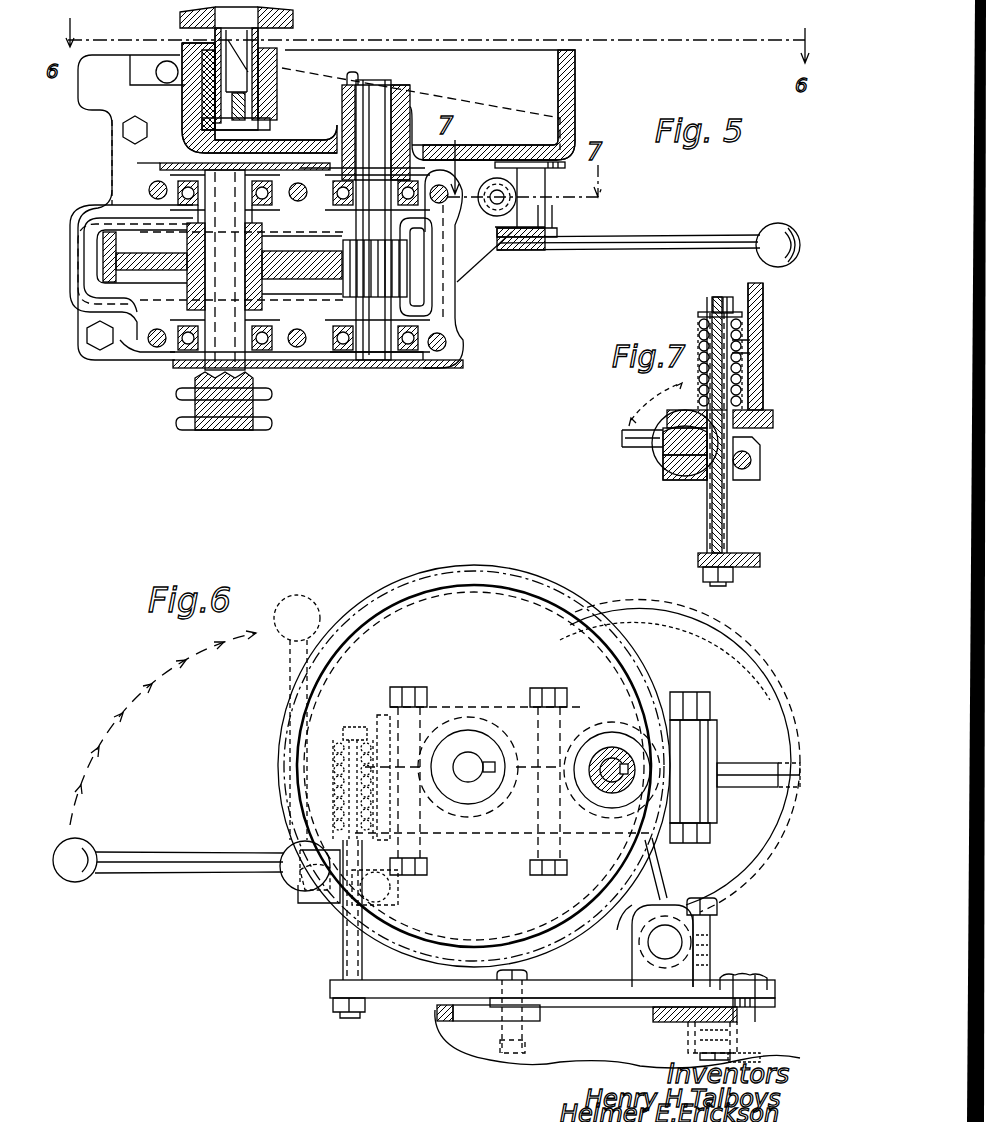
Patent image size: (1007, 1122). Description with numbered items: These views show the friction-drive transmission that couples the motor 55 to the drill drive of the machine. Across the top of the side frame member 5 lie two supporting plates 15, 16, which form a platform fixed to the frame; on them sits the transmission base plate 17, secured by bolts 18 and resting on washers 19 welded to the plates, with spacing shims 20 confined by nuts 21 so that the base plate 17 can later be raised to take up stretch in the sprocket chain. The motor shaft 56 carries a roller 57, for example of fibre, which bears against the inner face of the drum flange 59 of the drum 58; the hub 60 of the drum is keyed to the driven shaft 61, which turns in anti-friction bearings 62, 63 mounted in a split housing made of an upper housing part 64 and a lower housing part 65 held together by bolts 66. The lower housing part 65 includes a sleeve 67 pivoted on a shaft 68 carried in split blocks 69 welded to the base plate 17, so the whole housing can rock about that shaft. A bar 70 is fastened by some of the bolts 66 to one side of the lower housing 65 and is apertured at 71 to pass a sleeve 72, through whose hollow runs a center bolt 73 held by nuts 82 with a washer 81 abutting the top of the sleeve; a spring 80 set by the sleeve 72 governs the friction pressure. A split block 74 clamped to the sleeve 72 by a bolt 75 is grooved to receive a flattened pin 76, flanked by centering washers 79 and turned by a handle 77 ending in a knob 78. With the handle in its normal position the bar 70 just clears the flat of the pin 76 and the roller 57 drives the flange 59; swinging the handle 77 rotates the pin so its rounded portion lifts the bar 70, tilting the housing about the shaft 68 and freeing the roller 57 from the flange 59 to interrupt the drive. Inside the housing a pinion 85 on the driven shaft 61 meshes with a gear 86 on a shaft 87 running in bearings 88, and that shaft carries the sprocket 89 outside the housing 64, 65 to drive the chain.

In FIG. 6, the side frame member 5 is at (470, 1050).
In FIG. 6, the supporting plate 15 is at (655, 1014).
In FIG. 6, the supporting plate 16 is at (460, 1022).
In FIG. 5, the transmission base plate 17 is at (463, 263).
In FIG. 6, the transmission base plate 17 is at (408, 990).
In FIG. 5, the bolt 18 is at (120, 130).
In FIG. 6, the bolt 18 is at (530, 990).
In FIG. 6, the washer 19 is at (540, 1000).
In FIG. 6, the spacing shim 20 is at (695, 1030).
In FIG. 6, the nut 21 is at (700, 1056).
In FIG. 5, the motor 55 is at (296, 22).
In FIG. 5, the motor shaft 56 is at (236, 68).
In FIG. 6, the motor shaft 56 is at (600, 745).
In FIG. 5, the roller 57 is at (280, 98).
In FIG. 6, the roller 57 is at (598, 795).
In FIG. 5, the drum 58 is at (470, 150).
In FIG. 6, the drum 58 is at (442, 610).
In FIG. 5, the drum flange 59 is at (576, 88).
In FIG. 6, the drum flange 59 is at (400, 597).
In FIG. 5, the hub 60 is at (408, 95).
In FIG. 6, the hub 60 is at (487, 795).
In FIG. 5, the driven shaft 61 is at (375, 95).
In FIG. 6, the driven shaft 61 is at (470, 758).
In FIG. 5, the anti-friction bearing 62 is at (335, 170).
In FIG. 5, the anti-friction bearing 63 is at (345, 358).
In FIG. 5, the upper housing part 64 is at (452, 319).
In FIG. 7, the upper housing part 64 is at (762, 310).
In FIG. 6, the upper housing part 64 is at (748, 710).
In FIG. 5, the lower housing part 65 is at (445, 300).
In FIG. 7, the lower housing part 65 is at (765, 372).
In FIG. 6, the lower housing part 65 is at (770, 808).
In FIG. 5, the bolt 66 is at (150, 188).
In FIG. 6, the bolt 66 is at (412, 690).
In FIG. 5, the sleeve 67 is at (152, 115).
In FIG. 6, the sleeve 67 is at (632, 940).
In FIG. 5, the shaft 68 is at (160, 372).
In FIG. 6, the shaft 68 is at (655, 945).
In FIG. 5, the split block 69 is at (146, 58).
In FIG. 6, the split block 69 is at (718, 922).
In FIG. 7, the bar 70 is at (774, 423).
In FIG. 6, the bar 70 is at (465, 860).
In FIG. 7, the aperture 71 is at (760, 410).
In FIG. 7, the sleeve 72 is at (724, 523).
In FIG. 6, the sleeve 72 is at (346, 962).
In FIG. 5, the bolt 73 is at (560, 212).
In FIG. 7, the bolt 73 is at (716, 510).
In FIG. 6, the bolt 73 is at (346, 935).
In FIG. 7, the split block 74 is at (693, 480).
In FIG. 6, the split block 74 is at (300, 903).
In FIG. 7, the bolt 75 is at (752, 466).
In FIG. 6, the bolt 75 is at (392, 900).
In FIG. 5, the flattened pin 76 is at (548, 222).
In FIG. 7, the flattened pin 76 is at (670, 460).
In FIG. 6, the flattened pin 76 is at (290, 890).
In FIG. 5, the handle 77 is at (640, 242).
In FIG. 7, the handle 77 is at (622, 438).
In FIG. 6, the handle 77 is at (200, 875).
In FIG. 5, the knob 78 is at (770, 228).
In FIG. 6, the knob 78 is at (95, 848).
In FIG. 5, the centering washer 79 is at (555, 158).
In FIG. 7, the centering washer 79 is at (655, 452).
In FIG. 6, the centering washer 79 is at (292, 850).
In FIG. 7, the spring 80 is at (705, 371).
In FIG. 6, the spring 80 is at (365, 758).
In FIG. 5, the washer 81 is at (493, 217).
In FIG. 7, the washer 81 is at (698, 315).
In FIG. 6, the washer 81 is at (380, 730).
In FIG. 5, the nut 82 is at (516, 193).
In FIG. 7, the nut 82 is at (708, 298).
In FIG. 6, the nut 82 is at (348, 727).
In FIG. 5, the pinion 85 is at (400, 278).
In FIG. 5, the gear 86 is at (108, 240).
In FIG. 5, the shaft 87 is at (215, 352).
In FIG. 6, the shaft 87 is at (625, 745).
In FIG. 5, the bearing 88 is at (190, 190).
In FIG. 5, the sprocket 89 is at (182, 422).